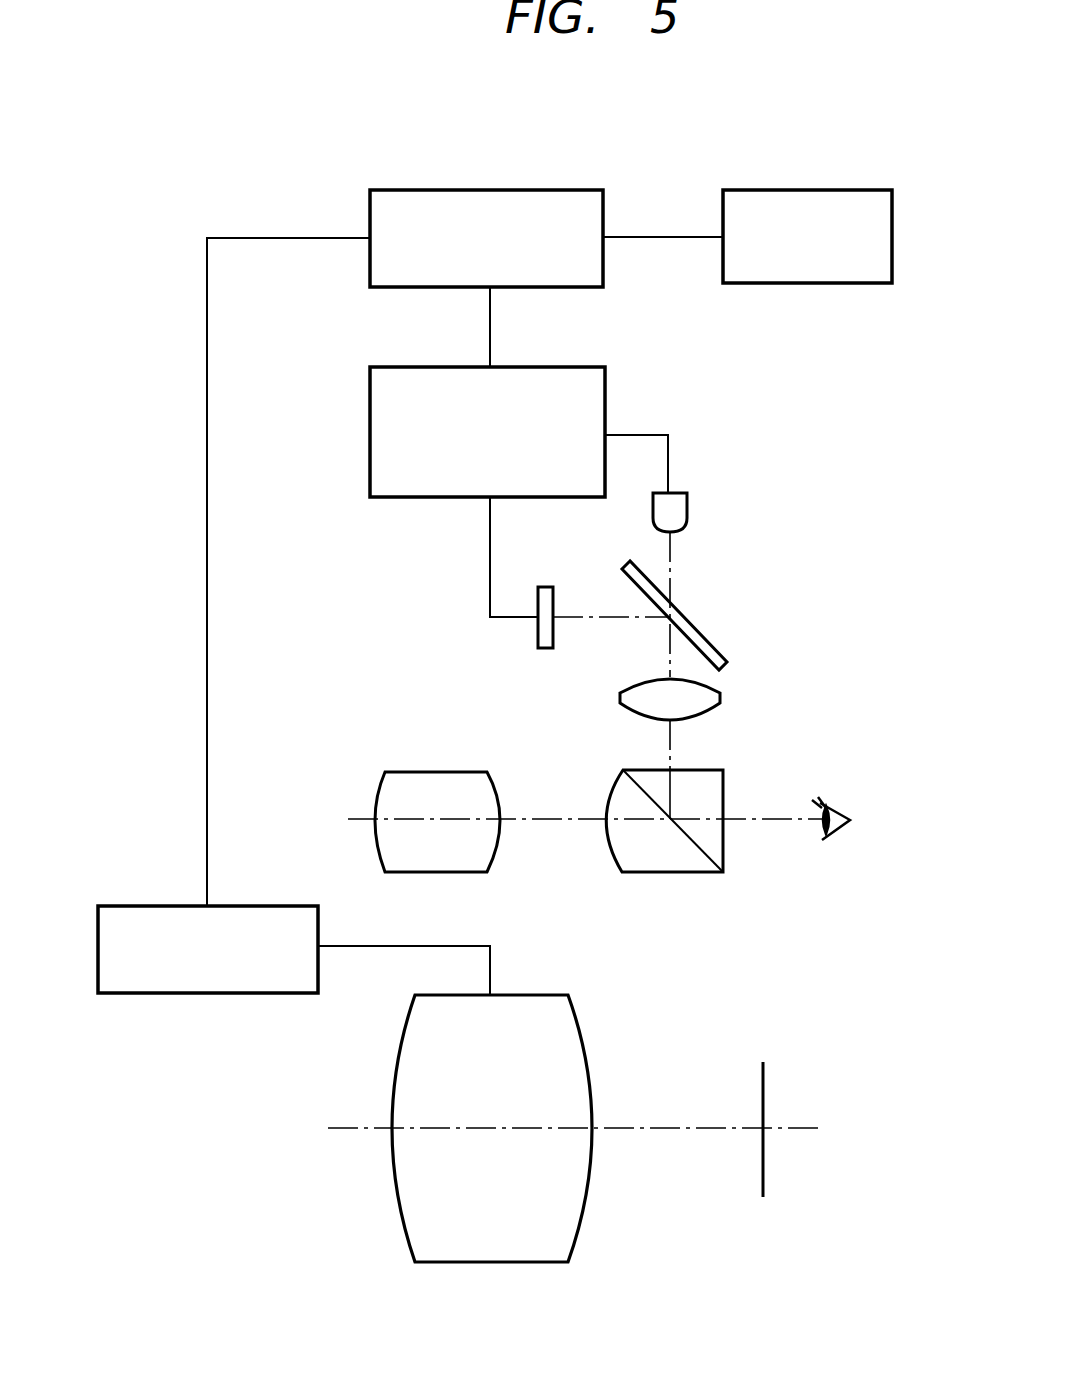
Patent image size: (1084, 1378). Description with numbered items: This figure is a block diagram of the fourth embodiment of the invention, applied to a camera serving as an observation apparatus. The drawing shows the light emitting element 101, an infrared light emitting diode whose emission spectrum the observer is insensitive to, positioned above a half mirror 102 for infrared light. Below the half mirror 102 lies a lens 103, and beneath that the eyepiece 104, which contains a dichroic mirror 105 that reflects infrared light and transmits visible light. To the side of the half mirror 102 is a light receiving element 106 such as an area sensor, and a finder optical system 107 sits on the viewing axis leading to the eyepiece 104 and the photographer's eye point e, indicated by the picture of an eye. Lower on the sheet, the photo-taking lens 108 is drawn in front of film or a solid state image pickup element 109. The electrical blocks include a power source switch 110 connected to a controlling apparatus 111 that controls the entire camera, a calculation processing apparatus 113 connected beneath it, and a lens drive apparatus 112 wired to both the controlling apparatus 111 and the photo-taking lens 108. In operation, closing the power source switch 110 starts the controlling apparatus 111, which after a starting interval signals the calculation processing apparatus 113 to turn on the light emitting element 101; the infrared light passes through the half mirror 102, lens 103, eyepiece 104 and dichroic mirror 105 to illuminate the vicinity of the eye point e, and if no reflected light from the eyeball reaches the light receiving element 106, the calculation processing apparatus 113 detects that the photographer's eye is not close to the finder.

The light emitting element 101 is at (688, 505).
The half mirror 102 is at (688, 625).
The lens 103 is at (722, 700).
The eyepiece 104 is at (725, 790).
The dichroic mirror 105 is at (713, 852).
The light receiving element 106 is at (553, 595).
The finder optical system 107 is at (455, 772).
The photo-taking lens 108 is at (580, 1228).
The film or solid state image pickup element 109 is at (765, 1175).
The power source switch 110 is at (825, 190).
The controlling apparatus 111 is at (520, 190).
The lens drive apparatus 112 is at (140, 906).
The calculation processing apparatus 113 is at (605, 380).
The eye point e is at (838, 804).